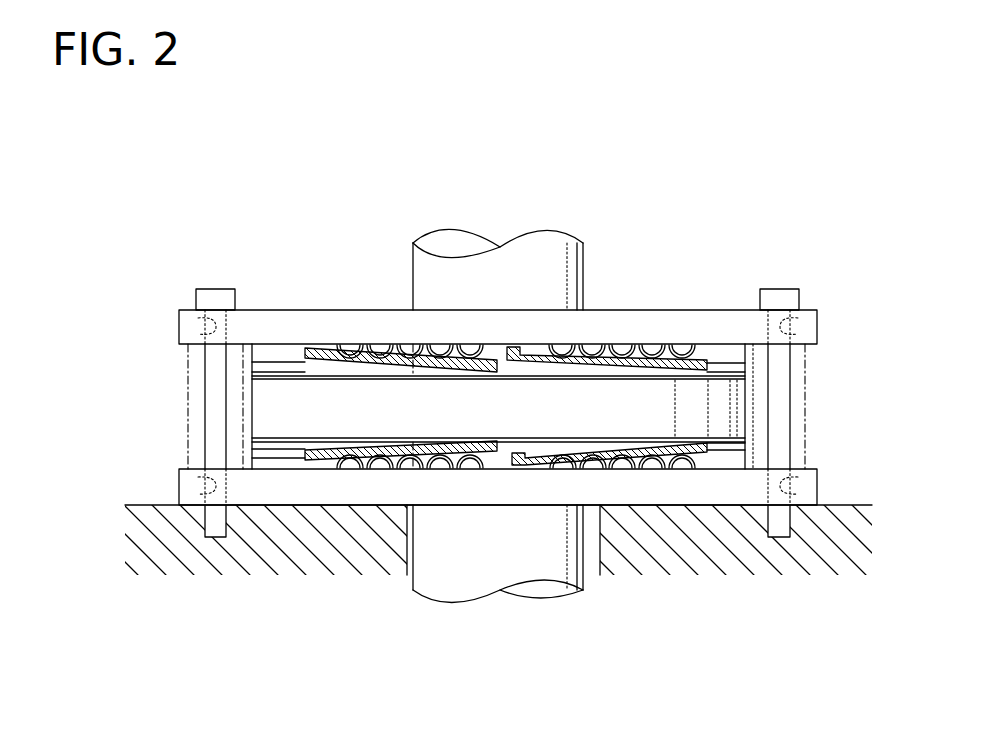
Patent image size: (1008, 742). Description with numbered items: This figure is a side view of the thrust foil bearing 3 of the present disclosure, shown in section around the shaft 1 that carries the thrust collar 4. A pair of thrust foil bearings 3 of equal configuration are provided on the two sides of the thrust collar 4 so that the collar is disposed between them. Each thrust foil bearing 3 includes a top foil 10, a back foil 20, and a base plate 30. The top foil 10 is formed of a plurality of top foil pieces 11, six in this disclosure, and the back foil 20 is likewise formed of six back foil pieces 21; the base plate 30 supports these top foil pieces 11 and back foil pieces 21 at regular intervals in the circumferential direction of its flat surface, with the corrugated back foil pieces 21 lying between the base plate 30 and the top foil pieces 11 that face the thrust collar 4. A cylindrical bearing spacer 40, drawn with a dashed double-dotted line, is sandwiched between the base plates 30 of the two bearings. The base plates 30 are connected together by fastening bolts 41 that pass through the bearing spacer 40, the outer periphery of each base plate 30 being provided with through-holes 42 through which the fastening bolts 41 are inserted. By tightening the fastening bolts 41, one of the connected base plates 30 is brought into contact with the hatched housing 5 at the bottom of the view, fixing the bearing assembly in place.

The rotating shaft 1 is at (413, 262).
The thrust foil bearing 3 is at (687, 276).
The thrust collar 4 is at (722, 405).
The housing 5 is at (296, 548).
The top foil 10 is at (628, 352).
The top foil piece 11 is at (408, 352).
The back foil 20 is at (645, 352).
The back foil piece 21 is at (380, 352).
The base plate 30 is at (725, 318).
The bearing spacer 40 is at (806, 408).
The fastening bolt 41 is at (213, 289).
The through-hole 42 is at (205, 326).